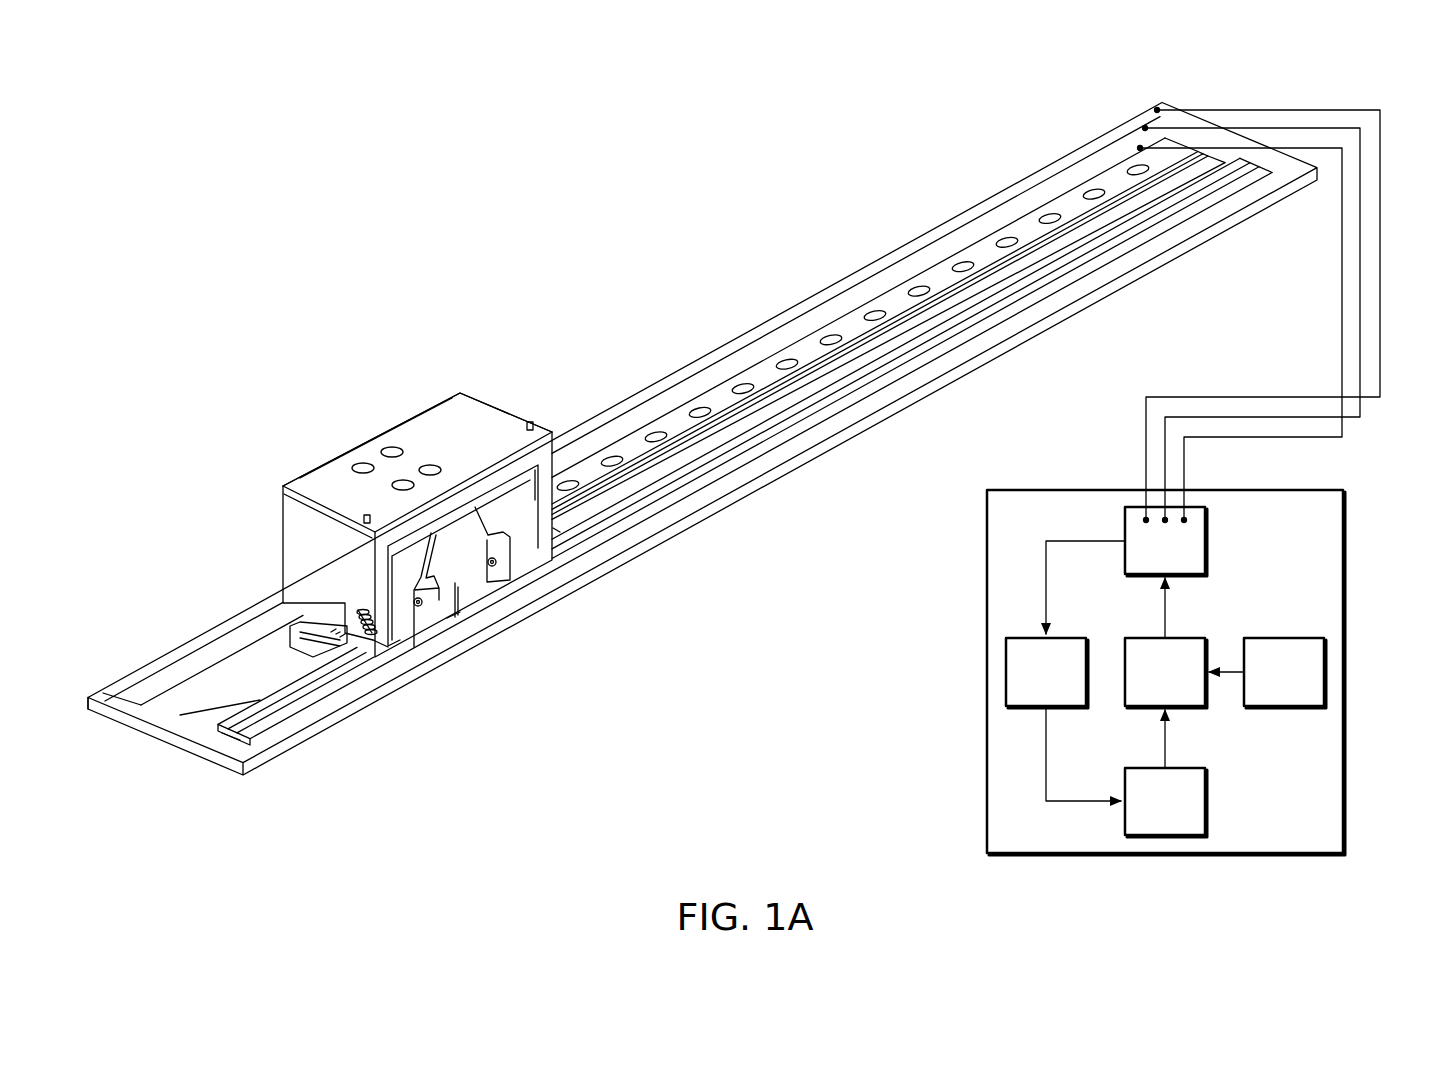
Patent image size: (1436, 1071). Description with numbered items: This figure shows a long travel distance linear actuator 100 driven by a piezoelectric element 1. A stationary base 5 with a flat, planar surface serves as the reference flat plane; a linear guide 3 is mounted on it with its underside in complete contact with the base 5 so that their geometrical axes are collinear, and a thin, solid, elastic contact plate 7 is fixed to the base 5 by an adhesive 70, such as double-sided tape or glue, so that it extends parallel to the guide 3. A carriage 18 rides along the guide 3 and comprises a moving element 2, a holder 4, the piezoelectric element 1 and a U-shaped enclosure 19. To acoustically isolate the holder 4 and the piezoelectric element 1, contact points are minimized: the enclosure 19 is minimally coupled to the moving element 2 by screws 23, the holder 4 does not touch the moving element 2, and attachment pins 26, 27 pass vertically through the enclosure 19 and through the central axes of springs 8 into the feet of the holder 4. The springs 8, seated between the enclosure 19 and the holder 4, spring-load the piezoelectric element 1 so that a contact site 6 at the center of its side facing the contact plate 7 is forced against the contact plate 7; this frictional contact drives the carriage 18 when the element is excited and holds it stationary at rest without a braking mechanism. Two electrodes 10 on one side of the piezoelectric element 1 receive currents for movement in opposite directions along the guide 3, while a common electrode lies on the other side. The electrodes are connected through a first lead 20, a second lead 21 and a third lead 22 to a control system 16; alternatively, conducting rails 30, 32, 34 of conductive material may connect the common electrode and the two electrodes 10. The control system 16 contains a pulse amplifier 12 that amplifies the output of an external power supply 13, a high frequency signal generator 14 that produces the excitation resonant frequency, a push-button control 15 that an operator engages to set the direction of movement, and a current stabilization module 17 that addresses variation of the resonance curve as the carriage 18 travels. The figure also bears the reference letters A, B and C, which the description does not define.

The linear actuator apparatus 100 is at (134, 735).
The moving element 2 is at (285, 612).
The base 5 is at (222, 686).
The adhesive 70 is at (226, 741).
The springs 8 is at (362, 632).
The holder 4 is at (532, 492).
The electrodes 10 is at (418, 604).
The contact site 6 is at (445, 610).
The piezoelectric element 1 is at (490, 574).
The attachment pin 26 is at (367, 515).
The screws 23 is at (392, 452).
The carriage 18 is at (413, 403).
The enclosure 19 is at (455, 420).
The attachment pin 27 is at (530, 422).
The guide 3 is at (848, 325).
The conducting rail 34 is at (942, 262).
The conducting rail 32 is at (990, 215).
The conducting rail 30 is at (1068, 165).
The contact plate 7 is at (767, 433).
The second lead 21 is at (1381, 200).
The third lead 22 is at (1382, 246).
The first lead 20 is at (1342, 287).
The control system 16 is at (1320, 490).
The push-button control 15 is at (1207, 537).
The current stabilization module 17 is at (1068, 638).
The pulse amplifier 12 is at (1188, 638).
The external power supply 13 is at (1290, 638).
The high frequency signal generator 14 is at (1207, 797).
The direction A is at (256, 708).
The direction B is at (840, 394).
The direction C is at (1130, 230).